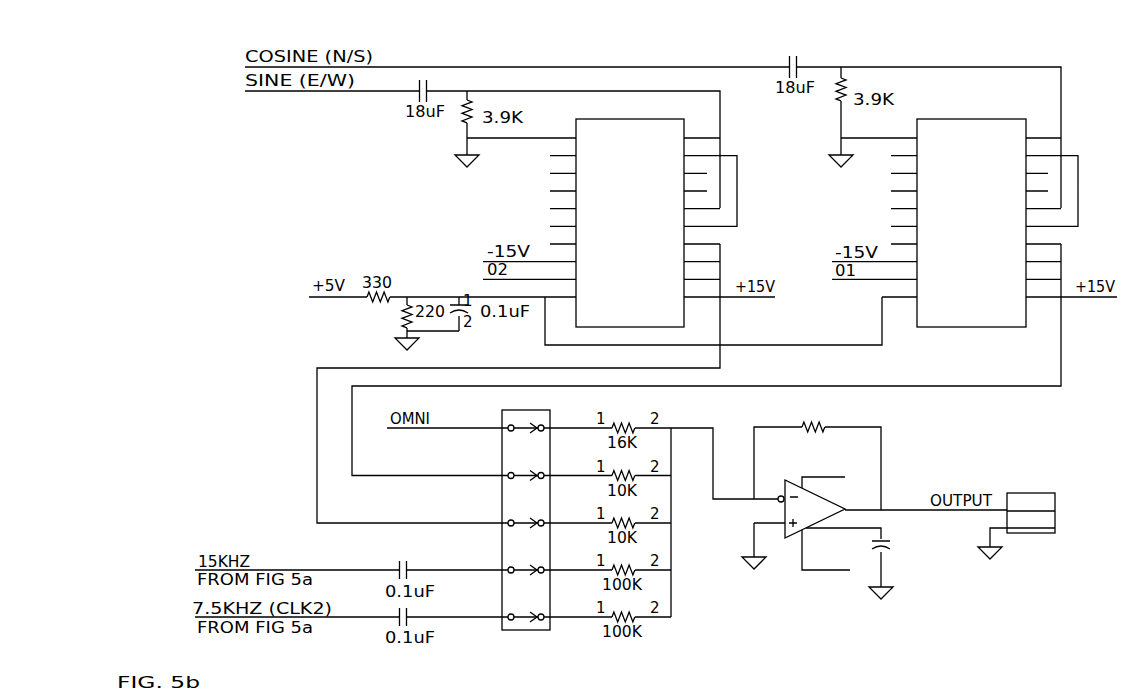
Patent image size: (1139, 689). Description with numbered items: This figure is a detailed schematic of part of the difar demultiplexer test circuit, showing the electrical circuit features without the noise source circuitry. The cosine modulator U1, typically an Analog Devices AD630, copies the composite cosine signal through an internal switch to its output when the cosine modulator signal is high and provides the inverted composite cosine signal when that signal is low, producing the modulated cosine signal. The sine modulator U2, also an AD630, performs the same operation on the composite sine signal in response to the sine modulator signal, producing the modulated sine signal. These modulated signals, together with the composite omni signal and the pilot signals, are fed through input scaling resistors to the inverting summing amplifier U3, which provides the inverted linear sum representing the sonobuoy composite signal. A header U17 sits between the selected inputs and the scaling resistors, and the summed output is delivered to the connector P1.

The cosine modulator U1 is at (999, 215).
The sine modulator U2 is at (662, 215).
The inverting summing amplifier U3 is at (874, 504).
The header HD1 selection jumper block U17 is at (530, 520).
The output connector P1 is at (1016, 517).